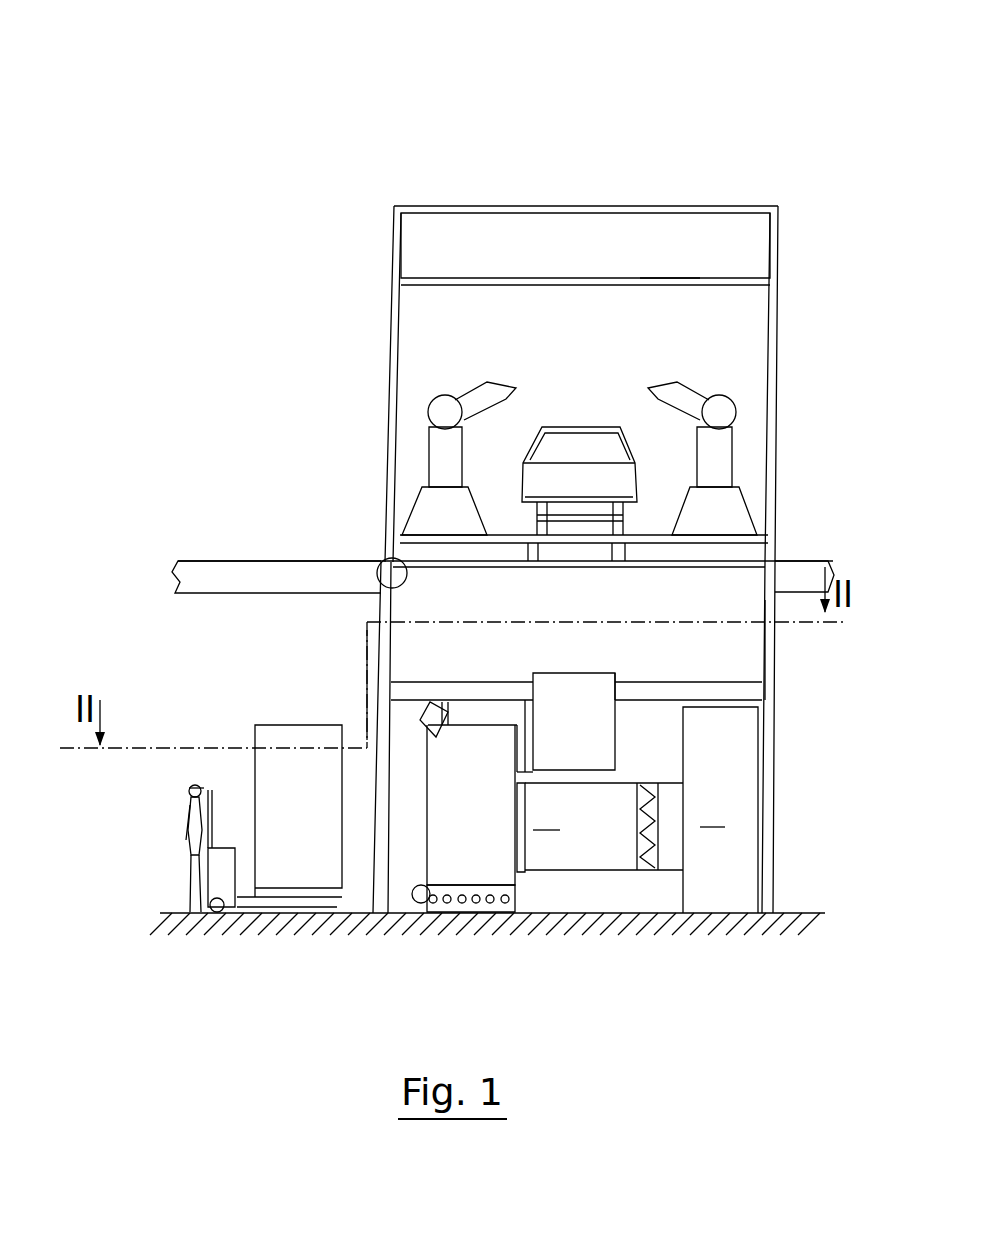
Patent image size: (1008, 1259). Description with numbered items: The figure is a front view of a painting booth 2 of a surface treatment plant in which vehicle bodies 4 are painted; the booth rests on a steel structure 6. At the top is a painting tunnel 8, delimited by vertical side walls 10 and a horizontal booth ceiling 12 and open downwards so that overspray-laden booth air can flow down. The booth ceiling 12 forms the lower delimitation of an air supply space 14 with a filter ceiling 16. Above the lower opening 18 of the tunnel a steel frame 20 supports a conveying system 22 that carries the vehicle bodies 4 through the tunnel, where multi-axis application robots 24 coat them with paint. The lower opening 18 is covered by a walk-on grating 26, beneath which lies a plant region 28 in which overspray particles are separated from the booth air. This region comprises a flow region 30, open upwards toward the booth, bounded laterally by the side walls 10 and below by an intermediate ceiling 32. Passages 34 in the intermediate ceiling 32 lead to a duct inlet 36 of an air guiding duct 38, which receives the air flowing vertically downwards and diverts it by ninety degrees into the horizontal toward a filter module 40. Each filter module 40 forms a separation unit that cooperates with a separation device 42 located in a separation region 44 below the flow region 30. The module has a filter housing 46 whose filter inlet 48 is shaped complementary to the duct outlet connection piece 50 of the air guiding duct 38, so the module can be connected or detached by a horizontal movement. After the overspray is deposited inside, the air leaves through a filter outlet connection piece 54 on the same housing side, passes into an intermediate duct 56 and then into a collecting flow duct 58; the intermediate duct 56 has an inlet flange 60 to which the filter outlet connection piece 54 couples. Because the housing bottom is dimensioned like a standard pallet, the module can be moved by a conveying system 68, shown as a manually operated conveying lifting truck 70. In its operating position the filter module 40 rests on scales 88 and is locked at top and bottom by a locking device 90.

The painting booth 2 is at (414, 108).
The vehicle body 4 is at (580, 427).
The steel structure 6 is at (770, 640).
The painting tunnel 8 is at (495, 345).
The side wall 10 is at (393, 348).
The booth ceiling 12 is at (430, 278).
The air supply space 14 is at (588, 265).
The filter ceiling 16 is at (650, 282).
The lower opening 18 is at (382, 590).
The steel frame 20 is at (740, 546).
The conveying system 22 is at (640, 518).
The application robot 24 is at (442, 458).
The grating 26 is at (737, 565).
The plant region 28 is at (365, 675).
The flow region 30 is at (558, 607).
The intermediate ceiling 32 is at (743, 690).
The passage 34 is at (613, 688).
The duct inlet 36 is at (610, 665).
The air guiding duct 38 is at (575, 737).
The filter module 40 is at (275, 858).
The separation device 42 is at (517, 870).
The separation region 44 is at (672, 767).
The filter housing 46 is at (450, 800).
The filter inlet 48 is at (497, 738).
The duct outlet connection piece 50 is at (523, 737).
The filter outlet connection piece 54 is at (557, 885).
The intermediate duct 56 is at (622, 858).
The collecting flow duct 58 is at (725, 827).
The inlet flange 60 is at (533, 830).
The conveying system 68 is at (272, 942).
The conveying lifting truck 70 is at (212, 887).
The scales 88 is at (455, 920).
The locking device 90 is at (418, 720).